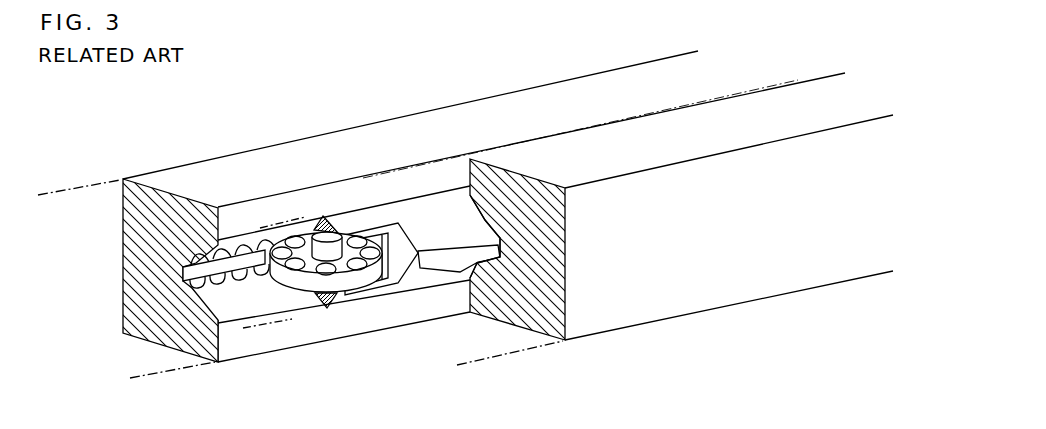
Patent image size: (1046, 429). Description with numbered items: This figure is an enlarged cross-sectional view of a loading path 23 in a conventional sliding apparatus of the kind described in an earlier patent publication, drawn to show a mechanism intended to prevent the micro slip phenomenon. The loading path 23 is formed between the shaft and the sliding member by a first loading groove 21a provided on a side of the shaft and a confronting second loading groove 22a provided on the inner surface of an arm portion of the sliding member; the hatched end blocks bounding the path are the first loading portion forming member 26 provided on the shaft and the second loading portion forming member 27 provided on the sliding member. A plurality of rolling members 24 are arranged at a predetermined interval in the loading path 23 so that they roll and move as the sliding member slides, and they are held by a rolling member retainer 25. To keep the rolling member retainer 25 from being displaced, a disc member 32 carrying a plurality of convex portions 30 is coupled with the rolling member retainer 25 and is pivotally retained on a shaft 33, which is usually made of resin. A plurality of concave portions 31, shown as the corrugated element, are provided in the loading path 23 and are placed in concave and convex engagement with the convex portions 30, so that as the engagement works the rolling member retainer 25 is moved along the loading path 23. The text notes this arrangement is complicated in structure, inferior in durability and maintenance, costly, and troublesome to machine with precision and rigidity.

The first loading groove 21a is at (222, 308).
The second loading groove 22a is at (470, 200).
The loading path 23 is at (238, 318).
The rolling member 24 is at (460, 268).
The rolling member retainer 25 is at (427, 193).
The first loading portion forming member 26 is at (122, 205).
The second loading portion forming member 27 is at (527, 312).
The convex portion 30 is at (325, 275).
The concave portion 31 is at (213, 285).
The disc member 32 is at (343, 288).
The shaft 33 is at (318, 220).